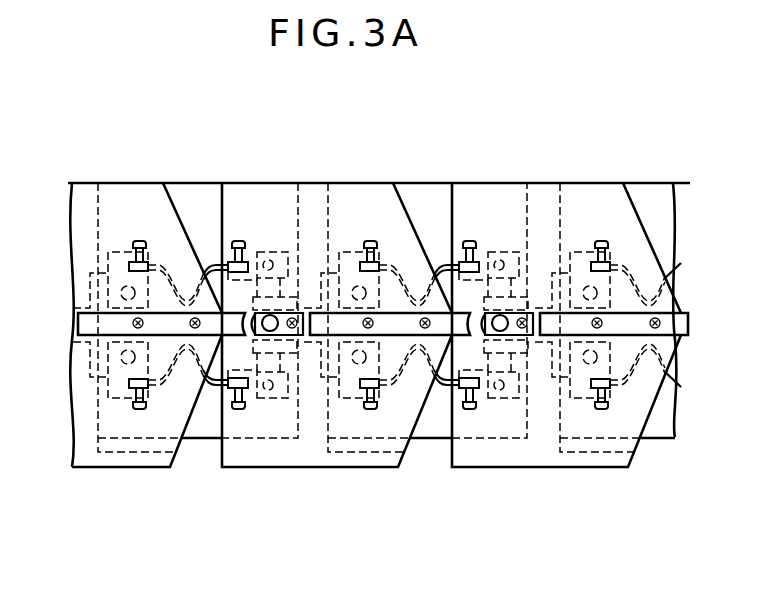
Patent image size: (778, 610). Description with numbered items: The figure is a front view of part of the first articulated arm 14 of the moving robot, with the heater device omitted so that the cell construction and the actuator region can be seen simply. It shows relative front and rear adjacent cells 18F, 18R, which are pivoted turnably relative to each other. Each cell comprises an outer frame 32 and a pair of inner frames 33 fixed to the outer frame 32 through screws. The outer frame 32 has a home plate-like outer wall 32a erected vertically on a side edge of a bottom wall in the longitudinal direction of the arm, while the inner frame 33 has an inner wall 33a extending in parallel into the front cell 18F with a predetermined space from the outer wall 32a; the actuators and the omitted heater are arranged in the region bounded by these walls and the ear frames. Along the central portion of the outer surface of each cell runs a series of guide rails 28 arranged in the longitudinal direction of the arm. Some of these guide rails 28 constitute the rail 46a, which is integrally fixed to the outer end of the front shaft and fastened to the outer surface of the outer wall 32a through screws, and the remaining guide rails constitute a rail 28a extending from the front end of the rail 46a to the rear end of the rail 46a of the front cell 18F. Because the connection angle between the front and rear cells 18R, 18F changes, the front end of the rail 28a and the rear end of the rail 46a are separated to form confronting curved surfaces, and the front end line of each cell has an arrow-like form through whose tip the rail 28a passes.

The first articulated arm 14 is at (382, 478).
The rear cell 18R is at (320, 182).
The front cell 18F is at (585, 180).
The guide rail 28 is at (538, 101).
The rail 28a is at (395, 317).
The rail 46a is at (505, 316).
The outer frame 32 is at (407, 460).
The outer wall 32a is at (245, 458).
The inner frame 33 is at (323, 447).
The inner wall 33a is at (438, 450).